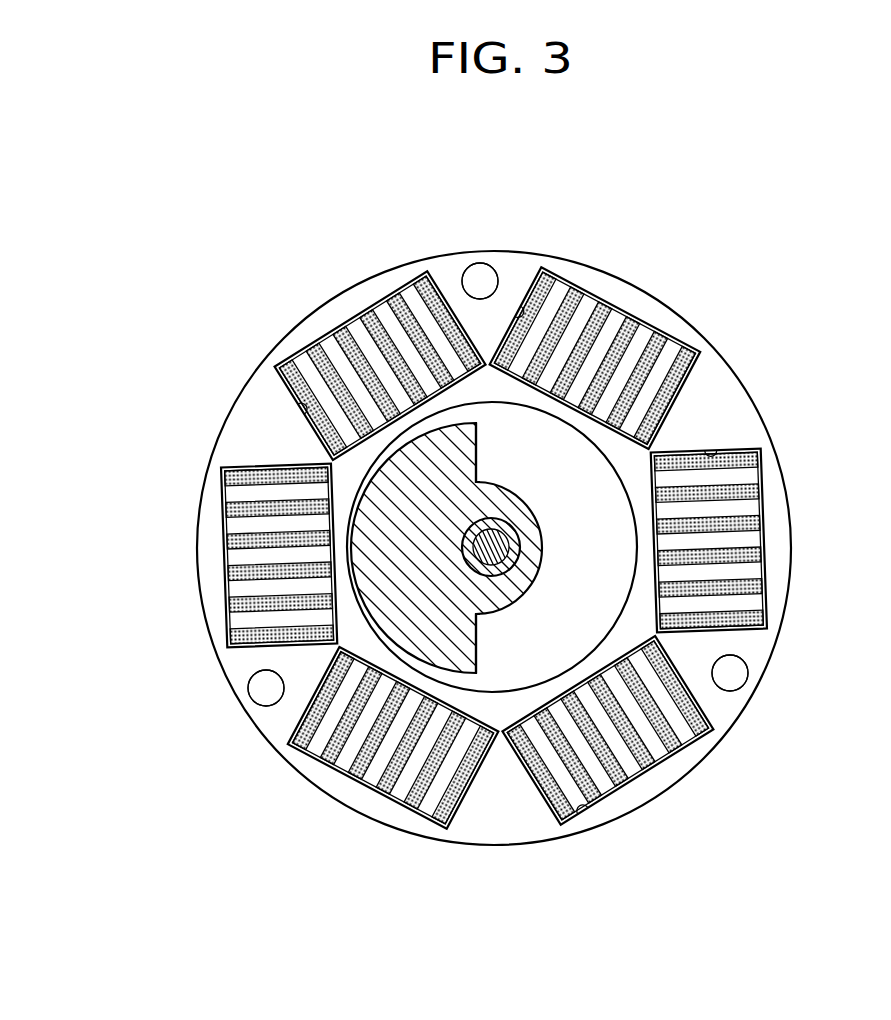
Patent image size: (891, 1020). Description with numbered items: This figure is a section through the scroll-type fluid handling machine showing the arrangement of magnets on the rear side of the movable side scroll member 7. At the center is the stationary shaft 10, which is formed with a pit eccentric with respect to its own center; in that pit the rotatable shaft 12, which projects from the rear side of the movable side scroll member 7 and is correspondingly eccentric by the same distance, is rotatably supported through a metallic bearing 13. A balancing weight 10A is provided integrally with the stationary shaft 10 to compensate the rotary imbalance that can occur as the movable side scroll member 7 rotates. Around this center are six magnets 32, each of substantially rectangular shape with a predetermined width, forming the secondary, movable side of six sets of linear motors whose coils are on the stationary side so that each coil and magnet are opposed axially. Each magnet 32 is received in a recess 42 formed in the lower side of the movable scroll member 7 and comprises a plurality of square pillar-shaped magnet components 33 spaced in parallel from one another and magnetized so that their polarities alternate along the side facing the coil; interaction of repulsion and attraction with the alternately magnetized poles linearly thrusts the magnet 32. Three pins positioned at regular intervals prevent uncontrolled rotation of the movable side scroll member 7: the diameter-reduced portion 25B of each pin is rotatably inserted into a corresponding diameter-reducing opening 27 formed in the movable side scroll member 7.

The movable side scroll member 7 is at (307, 320).
The stationary shaft 10 is at (498, 498).
The balancing weight 10A is at (463, 450).
The rotatable shaft 12 is at (508, 572).
The metallic bearing 13 is at (512, 537).
The diameter-reduced portion 25B is at (476, 278).
The diameter-reducing opening 27 is at (498, 283).
The magnet 32 is at (351, 319).
The magnet components 33 is at (418, 284).
The recess 42 is at (300, 406).